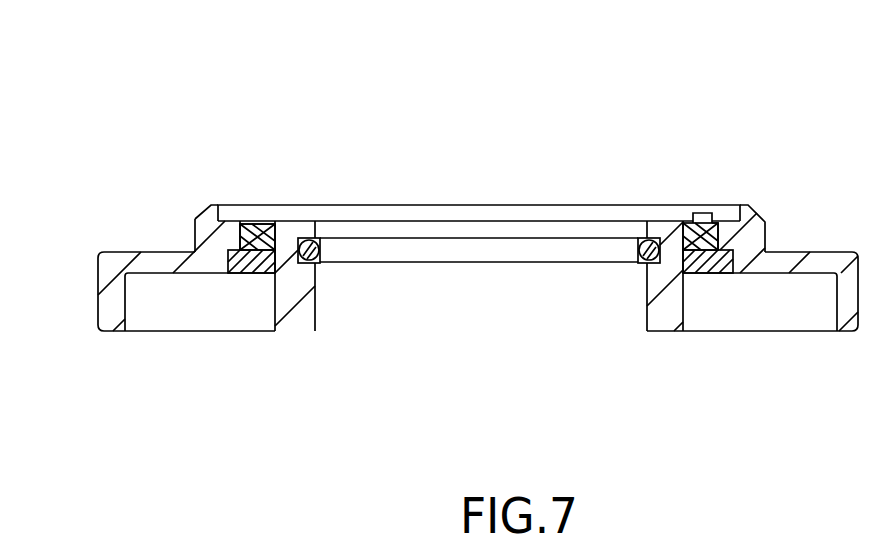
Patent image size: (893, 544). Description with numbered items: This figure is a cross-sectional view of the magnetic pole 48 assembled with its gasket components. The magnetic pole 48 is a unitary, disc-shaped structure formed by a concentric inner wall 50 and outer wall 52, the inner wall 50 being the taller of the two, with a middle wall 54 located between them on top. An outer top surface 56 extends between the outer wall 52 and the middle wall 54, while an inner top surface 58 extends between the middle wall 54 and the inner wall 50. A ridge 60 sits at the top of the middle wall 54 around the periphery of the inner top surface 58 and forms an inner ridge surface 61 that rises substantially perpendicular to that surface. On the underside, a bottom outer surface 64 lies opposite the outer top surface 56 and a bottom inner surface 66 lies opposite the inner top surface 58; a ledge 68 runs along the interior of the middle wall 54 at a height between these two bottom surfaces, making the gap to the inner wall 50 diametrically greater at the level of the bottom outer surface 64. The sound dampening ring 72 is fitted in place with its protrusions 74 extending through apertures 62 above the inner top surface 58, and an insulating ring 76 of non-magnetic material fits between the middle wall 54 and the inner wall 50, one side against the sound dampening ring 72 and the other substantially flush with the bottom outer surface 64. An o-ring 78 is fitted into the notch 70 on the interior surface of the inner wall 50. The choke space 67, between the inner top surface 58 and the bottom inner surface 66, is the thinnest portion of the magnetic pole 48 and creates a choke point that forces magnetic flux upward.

The magnetic pole 48 is at (580, 130).
The inner wall 50 is at (292, 331).
The outer wall 52 is at (98, 293).
The middle wall 54 is at (207, 233).
The outer top surface 56 is at (783, 252).
The inner top surface 58 is at (349, 221).
The ridge 60 is at (202, 208).
The inner ridge surface 61 is at (272, 222).
The apertures 62 is at (716, 220).
The bottom outer surface 64 is at (775, 273).
The bottom inner surface 66 is at (268, 228).
The choke space 67 is at (258, 222).
The ledge 68 is at (724, 255).
The notch 70 is at (412, 263).
The sound dampening ring 72 is at (700, 233).
The protrusions 74 is at (700, 213).
The insulating ring 76 is at (710, 255).
The o-ring 78 is at (380, 252).